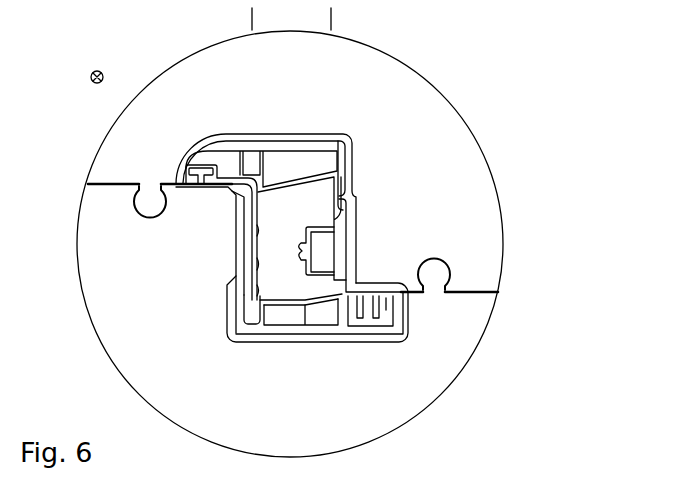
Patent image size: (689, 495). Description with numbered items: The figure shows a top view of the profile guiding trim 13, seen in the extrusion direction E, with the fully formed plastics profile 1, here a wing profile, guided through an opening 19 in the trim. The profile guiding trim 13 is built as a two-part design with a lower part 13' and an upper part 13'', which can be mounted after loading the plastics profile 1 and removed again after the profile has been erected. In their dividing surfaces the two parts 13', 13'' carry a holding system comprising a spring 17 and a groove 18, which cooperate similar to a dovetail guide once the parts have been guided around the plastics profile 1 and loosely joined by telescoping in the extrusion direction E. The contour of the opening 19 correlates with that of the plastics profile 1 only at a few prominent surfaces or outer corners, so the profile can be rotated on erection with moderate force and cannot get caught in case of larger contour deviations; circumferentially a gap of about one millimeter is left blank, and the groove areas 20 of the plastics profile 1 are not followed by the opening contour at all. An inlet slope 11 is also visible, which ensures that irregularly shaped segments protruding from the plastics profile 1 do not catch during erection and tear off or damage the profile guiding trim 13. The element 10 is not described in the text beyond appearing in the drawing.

The plastics profile 1 is at (198, 165).
The facade element 10 is at (487, 112).
The inlet slope 11 is at (348, 158).
The profile guiding trim 13 is at (280, 241).
The lower part 13' is at (518, 376).
The upper part 13'' is at (576, 134).
The spring 17 is at (147, 197).
The groove 18 is at (150, 212).
The opening 19 is at (194, 176).
The groove areas 20 is at (203, 177).
The extrusion direction E is at (107, 77).